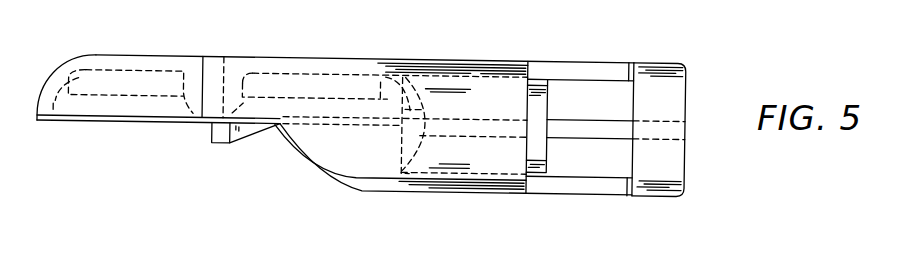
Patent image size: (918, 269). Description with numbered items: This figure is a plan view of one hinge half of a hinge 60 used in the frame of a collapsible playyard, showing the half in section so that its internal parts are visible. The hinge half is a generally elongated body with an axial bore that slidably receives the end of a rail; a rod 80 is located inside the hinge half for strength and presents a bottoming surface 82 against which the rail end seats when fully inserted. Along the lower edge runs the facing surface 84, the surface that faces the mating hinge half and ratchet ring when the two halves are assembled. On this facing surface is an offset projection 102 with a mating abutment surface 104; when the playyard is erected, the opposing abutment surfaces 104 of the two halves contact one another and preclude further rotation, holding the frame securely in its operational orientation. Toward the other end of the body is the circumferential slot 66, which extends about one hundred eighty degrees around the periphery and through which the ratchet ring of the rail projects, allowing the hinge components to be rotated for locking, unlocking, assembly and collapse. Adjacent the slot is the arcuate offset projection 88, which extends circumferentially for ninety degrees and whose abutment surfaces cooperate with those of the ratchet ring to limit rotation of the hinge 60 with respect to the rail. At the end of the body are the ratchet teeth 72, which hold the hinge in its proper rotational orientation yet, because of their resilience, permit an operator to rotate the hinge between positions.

The hinge 60 is at (295, 56).
The rod 80 is at (128, 80).
The bottoming surface 82 is at (422, 62).
The facing surface 84 is at (117, 124).
The mating abutment surface 104 is at (212, 131).
The offset projection 102 is at (250, 142).
The circumferential slot 66 is at (534, 73).
The offset projection 88 is at (551, 98).
The ratchet teeth 72 is at (632, 139).